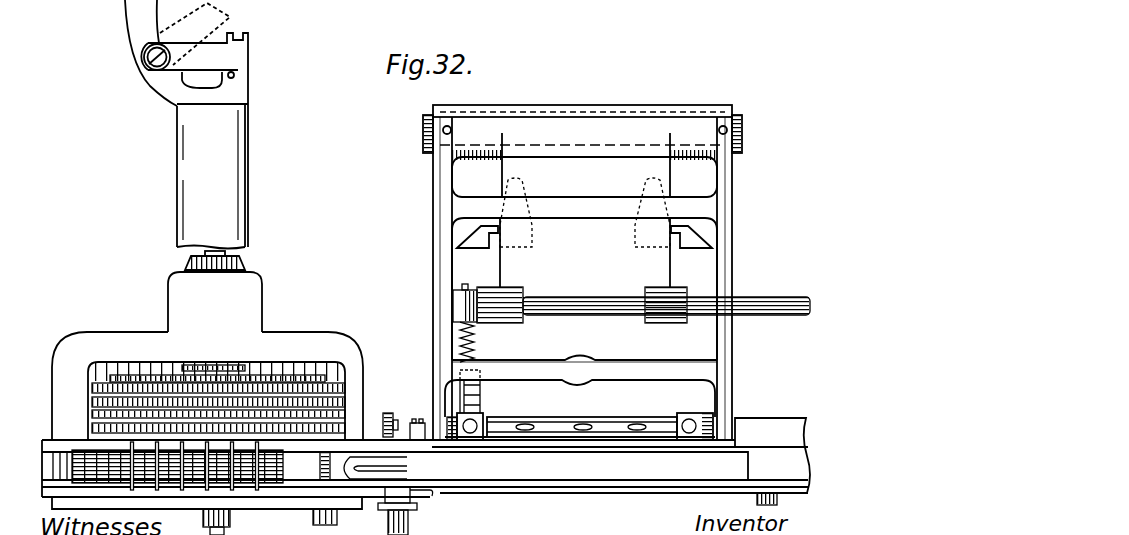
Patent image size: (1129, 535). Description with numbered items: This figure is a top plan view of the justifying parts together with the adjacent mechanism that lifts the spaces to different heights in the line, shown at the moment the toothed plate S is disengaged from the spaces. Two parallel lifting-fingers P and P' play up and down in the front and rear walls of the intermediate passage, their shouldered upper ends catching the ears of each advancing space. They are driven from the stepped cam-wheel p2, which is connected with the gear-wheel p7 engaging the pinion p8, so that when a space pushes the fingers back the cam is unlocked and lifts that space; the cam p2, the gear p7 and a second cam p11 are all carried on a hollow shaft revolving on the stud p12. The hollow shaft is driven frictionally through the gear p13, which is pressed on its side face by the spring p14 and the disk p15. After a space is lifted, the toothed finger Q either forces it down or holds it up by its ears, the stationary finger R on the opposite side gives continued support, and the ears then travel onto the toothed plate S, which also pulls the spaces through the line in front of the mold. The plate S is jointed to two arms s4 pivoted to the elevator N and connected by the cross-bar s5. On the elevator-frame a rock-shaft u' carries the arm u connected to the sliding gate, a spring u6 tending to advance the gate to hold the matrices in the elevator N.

The stud p12 is at (271, 300).
The pinion p8 is at (347, 393).
The spring p14 is at (240, 361).
The disk p15 is at (285, 373).
The gear p13 is at (88, 387).
The gear-wheel p7 is at (90, 402).
The cam-wheel p2 is at (92, 413).
The cam-wheel p11 is at (92, 428).
The elevator N is at (558, 256).
The rock-shaft u' is at (631, 308).
The spring u6 is at (471, 347).
The arms s4 is at (745, 338).
The cross-bar s5 is at (578, 378).
The toothed plate S is at (603, 427).
The slide block s is at (488, 418).
The arm u is at (445, 391).
The stationary finger R is at (411, 422).
The lifting-finger P' is at (392, 405).
The toothed finger Q is at (418, 497).
The lifting-finger P is at (391, 511).